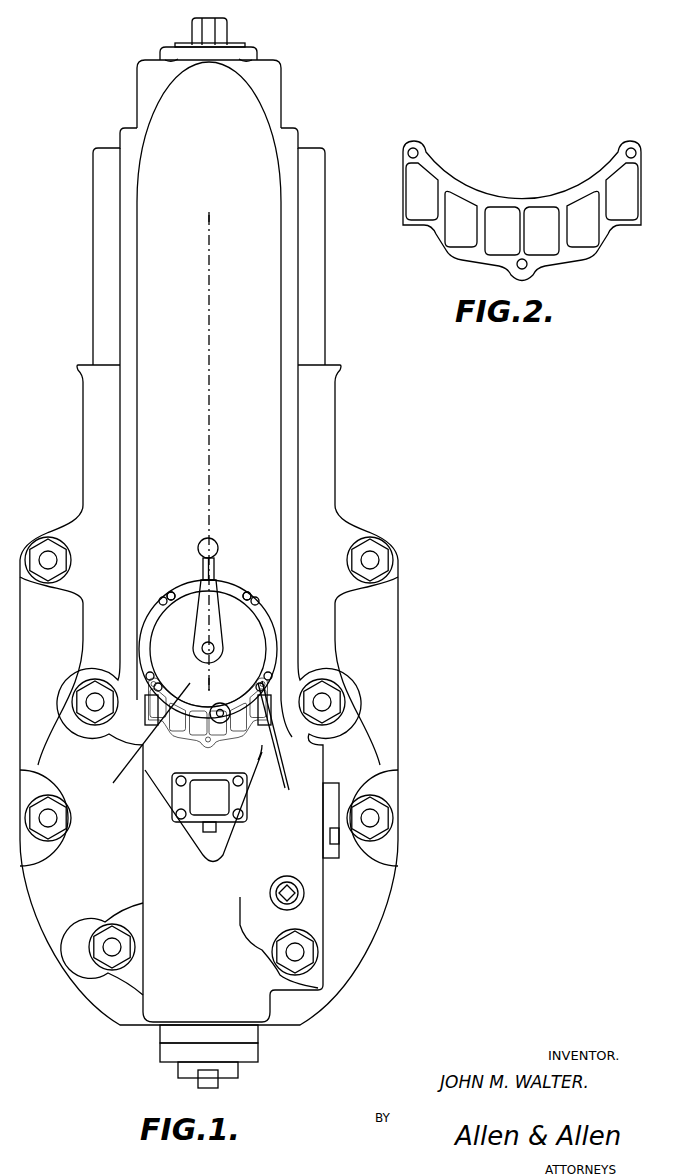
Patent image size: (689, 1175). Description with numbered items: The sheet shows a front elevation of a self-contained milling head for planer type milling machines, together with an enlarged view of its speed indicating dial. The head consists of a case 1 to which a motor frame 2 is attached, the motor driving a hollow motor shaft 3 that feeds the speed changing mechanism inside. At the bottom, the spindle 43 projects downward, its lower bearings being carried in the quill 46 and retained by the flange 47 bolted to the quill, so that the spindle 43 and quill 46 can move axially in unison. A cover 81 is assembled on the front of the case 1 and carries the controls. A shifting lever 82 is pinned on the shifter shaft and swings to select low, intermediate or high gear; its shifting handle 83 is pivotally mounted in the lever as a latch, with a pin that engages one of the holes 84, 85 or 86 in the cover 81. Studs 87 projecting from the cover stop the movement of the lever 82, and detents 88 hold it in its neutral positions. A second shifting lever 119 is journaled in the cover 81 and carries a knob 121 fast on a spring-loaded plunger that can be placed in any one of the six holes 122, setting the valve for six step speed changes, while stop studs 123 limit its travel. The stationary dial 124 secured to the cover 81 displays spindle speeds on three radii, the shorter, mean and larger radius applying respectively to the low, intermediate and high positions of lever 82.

In FIG. 1, the case 1 is at (320, 457).
In FIG. 1, the motor frame 2 is at (318, 265).
In FIG. 1, the motor shaft 3 is at (212, 217).
In FIG. 1, the spindle 43 is at (178, 1073).
In FIG. 1, the quill 46 is at (258, 1036).
In FIG. 1, the flange 47 is at (258, 1055).
In FIG. 1, the cover 81 is at (261, 770).
In FIG. 1, the shifting lever 82 is at (224, 646).
In FIG. 1, the shifting handle 83 is at (213, 540).
In FIG. 1, the hole 84 is at (177, 602).
In FIG. 1, the hole 85 is at (218, 578).
In FIG. 1, the hole 86 is at (221, 640).
In FIG. 1, the studs 87 is at (165, 600).
In FIG. 1, the detents 88 is at (180, 586).
In FIG. 1, the shifting lever 119 is at (224, 703).
In FIG. 1, the knob 121 is at (224, 751).
In FIG. 1, the holes 122 is at (147, 755).
In FIG. 1, the stop studs 123 is at (265, 682).
In FIG. 1, the stationary dial 124 is at (283, 722).
In FIG. 2, the stationary dial 124 is at (583, 255).